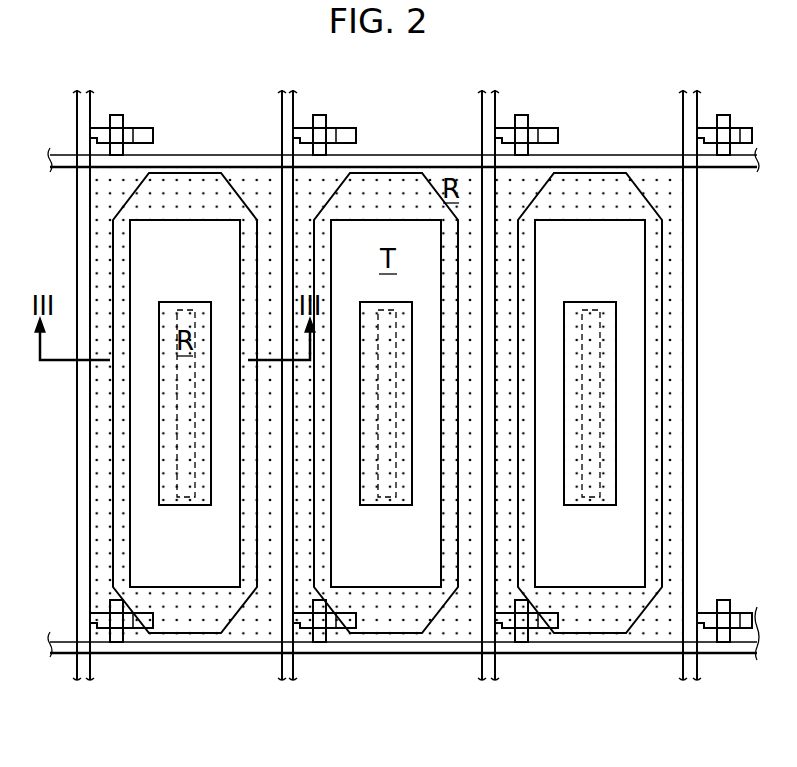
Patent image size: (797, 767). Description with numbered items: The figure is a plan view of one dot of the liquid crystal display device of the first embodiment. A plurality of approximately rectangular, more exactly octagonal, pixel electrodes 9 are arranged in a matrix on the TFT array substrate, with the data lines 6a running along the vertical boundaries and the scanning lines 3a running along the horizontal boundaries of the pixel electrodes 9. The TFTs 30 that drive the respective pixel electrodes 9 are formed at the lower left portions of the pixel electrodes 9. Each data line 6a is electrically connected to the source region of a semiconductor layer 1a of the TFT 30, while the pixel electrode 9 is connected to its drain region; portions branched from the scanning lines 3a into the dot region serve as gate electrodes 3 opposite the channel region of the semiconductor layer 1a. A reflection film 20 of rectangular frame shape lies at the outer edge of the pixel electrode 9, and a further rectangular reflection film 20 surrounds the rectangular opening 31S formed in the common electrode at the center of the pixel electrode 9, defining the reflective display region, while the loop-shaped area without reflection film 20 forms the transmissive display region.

The data line 6a is at (281, 142).
The reflection film 20 is at (185, 310).
The pixel electrode 9 is at (433, 625).
The opening 31S is at (178, 462).
The scanning line 3a is at (617, 652).
The TFT 30 is at (421, 428).
The semiconductor layer 1a is at (305, 627).
The gate electrode 3 is at (320, 615).